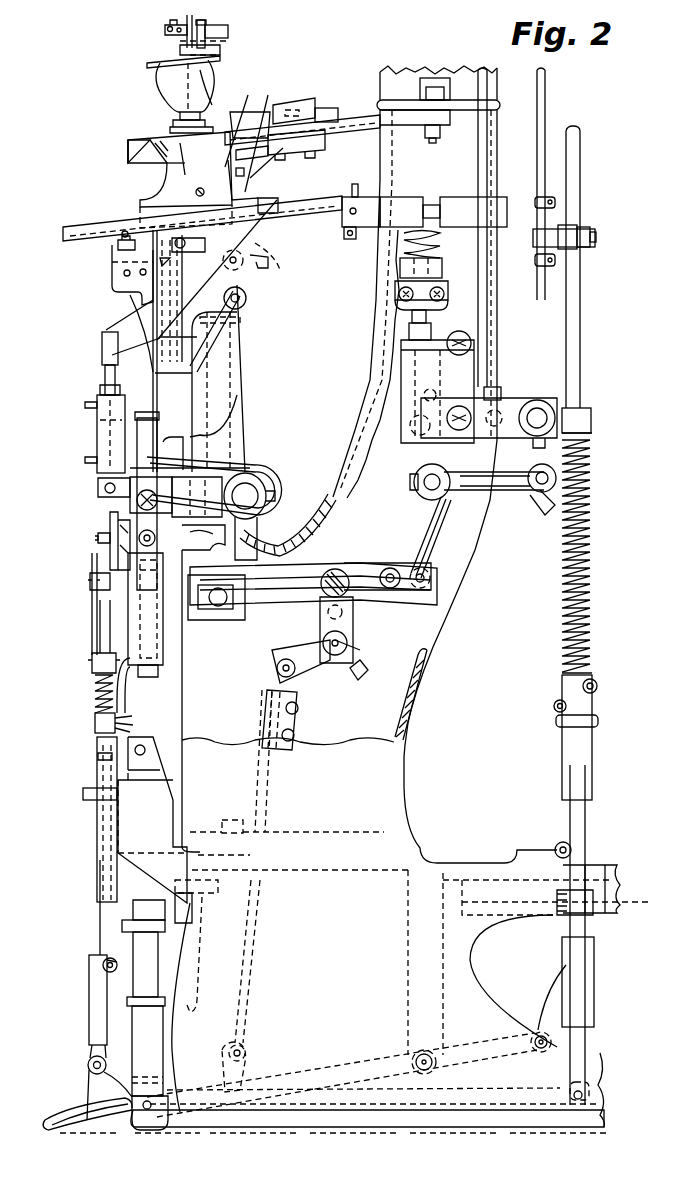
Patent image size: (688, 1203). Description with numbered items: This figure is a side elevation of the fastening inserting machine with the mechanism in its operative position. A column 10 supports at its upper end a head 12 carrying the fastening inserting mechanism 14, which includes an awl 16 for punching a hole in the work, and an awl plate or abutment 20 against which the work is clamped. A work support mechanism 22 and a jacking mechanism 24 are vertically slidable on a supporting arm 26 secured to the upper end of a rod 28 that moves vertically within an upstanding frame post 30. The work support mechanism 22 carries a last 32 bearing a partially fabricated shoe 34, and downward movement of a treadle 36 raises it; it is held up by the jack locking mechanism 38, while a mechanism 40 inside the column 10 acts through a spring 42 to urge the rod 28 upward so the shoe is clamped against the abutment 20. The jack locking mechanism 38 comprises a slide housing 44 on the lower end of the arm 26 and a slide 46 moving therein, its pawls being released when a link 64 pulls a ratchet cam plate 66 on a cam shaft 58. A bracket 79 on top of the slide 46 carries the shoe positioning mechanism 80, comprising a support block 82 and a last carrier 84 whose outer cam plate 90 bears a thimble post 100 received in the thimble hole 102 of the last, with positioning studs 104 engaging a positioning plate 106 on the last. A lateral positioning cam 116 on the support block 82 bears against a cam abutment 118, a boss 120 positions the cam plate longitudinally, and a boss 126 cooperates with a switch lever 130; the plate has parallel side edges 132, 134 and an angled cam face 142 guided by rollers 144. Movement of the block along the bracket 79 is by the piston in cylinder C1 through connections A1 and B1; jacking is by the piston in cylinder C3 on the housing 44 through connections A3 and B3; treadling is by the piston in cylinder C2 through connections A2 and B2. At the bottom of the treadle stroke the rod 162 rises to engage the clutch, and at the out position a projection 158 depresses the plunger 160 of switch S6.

The column 10 is at (462, 76).
The head 12 is at (225, 21).
The fastening inserting mechanism 14 is at (158, 42).
The awl 16 is at (242, 30).
The awl plate or abutment 20 is at (228, 36).
The work support mechanism 22 is at (150, 298).
The jacking mechanism 24 is at (63, 521).
The supporting arm 26 is at (237, 343).
The rod 28 is at (240, 393).
The frame post 30 is at (245, 438).
The last 32 is at (176, 108).
The shoe 34 is at (150, 78).
The treadle 36 is at (313, 1060).
The jack locking mechanism 38 is at (83, 555).
The mechanism within the column 40 is at (440, 561).
The spring 42 is at (430, 246).
The slide housing 44 is at (128, 638).
The slide 46 is at (125, 438).
The cam shaft 58 is at (98, 536).
The link 64 is at (97, 610).
The ratchet cam plate 66 is at (110, 513).
The bracket 79 is at (255, 266).
The shoe positioning mechanism 80 is at (46, 228).
The support block 82 is at (167, 180).
The last carrier 84 is at (106, 151).
The cam plate 90 is at (250, 110).
The thimble post 100 is at (205, 78).
The thimble hole 102 is at (212, 98).
The positioning studs 104 is at (173, 121).
The positioning plate 106 is at (240, 118).
The lateral positioning cam 116 is at (250, 185).
The cam abutment 118 is at (300, 150).
The projecting boss 120 is at (262, 160).
The boss 126 is at (128, 140).
The switch lever 130 is at (326, 104).
The side edge 132 is at (290, 106).
The side edge 134 is at (128, 158).
The cam face 142 is at (199, 169).
The rollers 144 is at (240, 123).
The projection 158 is at (263, 243).
The plunger 160 is at (118, 246).
The rod 162 is at (583, 295).
The connection A-1 A1 is at (288, 270).
The connection B-1 B1 is at (358, 192).
The cylinder C-1 C1 is at (332, 225).
The connection A-2 A2 is at (83, 792).
The connection B-2 B2 is at (90, 903).
The cylinder C-2 C2 is at (128, 876).
The connection A-3 A3 is at (85, 458).
The connection B-3 B3 is at (88, 403).
The cylinder C-3 C3 is at (100, 444).
The switch S-6 S6 is at (101, 293).